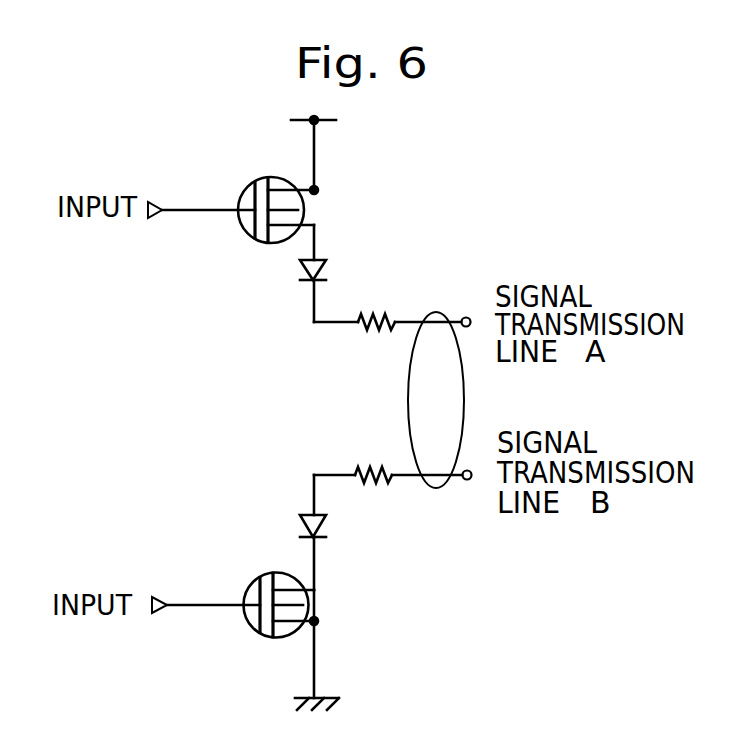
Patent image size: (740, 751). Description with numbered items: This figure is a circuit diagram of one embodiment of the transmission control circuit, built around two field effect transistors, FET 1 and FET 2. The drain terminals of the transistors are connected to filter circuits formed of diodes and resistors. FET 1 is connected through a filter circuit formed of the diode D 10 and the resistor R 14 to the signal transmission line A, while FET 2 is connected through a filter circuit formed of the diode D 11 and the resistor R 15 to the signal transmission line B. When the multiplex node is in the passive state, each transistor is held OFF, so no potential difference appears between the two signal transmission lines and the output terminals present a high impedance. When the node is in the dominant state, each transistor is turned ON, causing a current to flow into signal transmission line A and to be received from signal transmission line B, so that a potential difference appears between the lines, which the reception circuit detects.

The FET1 1 is at (334, 218).
The FET2 2 is at (336, 636).
The diode D10 10 is at (293, 288).
The diode D11 11 is at (294, 532).
The resistor R14 14 is at (387, 306).
The resistor R15 15 is at (388, 456).